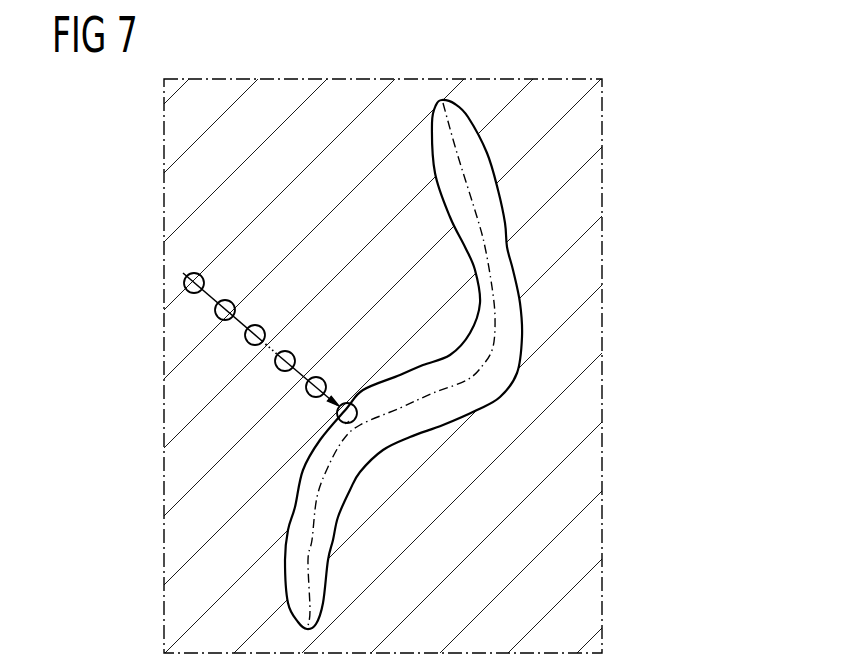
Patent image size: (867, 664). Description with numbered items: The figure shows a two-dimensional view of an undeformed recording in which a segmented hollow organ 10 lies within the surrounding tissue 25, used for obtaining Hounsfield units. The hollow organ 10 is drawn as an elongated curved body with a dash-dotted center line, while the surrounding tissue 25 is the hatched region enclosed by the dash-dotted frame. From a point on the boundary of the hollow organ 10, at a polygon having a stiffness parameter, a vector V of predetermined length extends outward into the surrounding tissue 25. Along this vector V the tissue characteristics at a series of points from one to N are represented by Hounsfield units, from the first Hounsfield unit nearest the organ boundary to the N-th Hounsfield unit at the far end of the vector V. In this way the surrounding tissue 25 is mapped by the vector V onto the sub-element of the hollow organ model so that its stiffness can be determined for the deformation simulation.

The image region with tissue 25 is at (603, 170).
The vessel 10 is at (523, 338).
The vector V is at (243, 326).